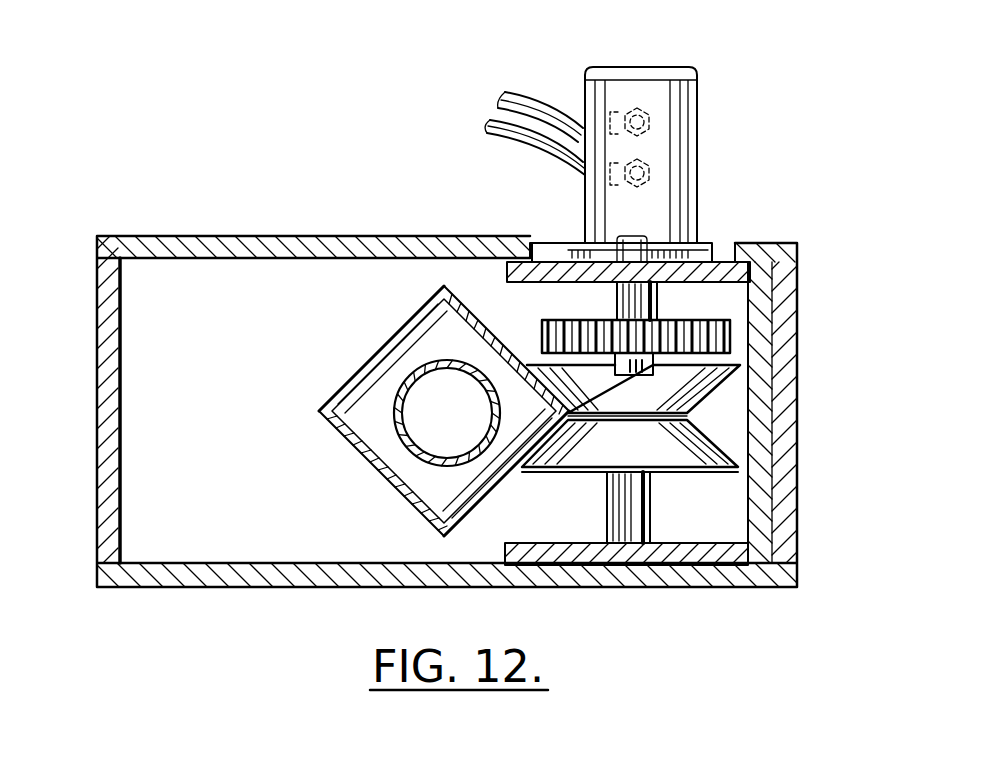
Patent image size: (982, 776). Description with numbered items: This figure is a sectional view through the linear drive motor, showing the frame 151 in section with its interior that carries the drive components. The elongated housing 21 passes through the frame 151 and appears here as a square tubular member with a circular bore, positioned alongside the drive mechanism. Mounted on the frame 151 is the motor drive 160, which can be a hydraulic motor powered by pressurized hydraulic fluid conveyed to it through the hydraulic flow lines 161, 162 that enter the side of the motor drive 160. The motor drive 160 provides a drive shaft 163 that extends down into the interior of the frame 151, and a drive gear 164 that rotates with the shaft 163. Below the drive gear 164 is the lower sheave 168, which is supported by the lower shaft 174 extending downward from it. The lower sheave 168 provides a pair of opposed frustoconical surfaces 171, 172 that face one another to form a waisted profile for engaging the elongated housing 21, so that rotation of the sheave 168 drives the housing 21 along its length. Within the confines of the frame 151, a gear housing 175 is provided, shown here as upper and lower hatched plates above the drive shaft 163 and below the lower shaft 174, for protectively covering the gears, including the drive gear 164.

The frame 151 is at (160, 243).
The motor drive 160 is at (697, 97).
The hydraulic flow line 161 is at (547, 105).
The hydraulic flow line 162 is at (585, 168).
The drive shaft 163 is at (657, 298).
The drive gear 164 is at (735, 340).
The lower sheave 168 is at (577, 470).
The frustoconical surface 171 is at (705, 395).
The frustoconical surface 172 is at (715, 440).
The lower shaft 174 is at (650, 505).
The gear housing 175 is at (507, 266).
The elongated housing 21 is at (372, 463).